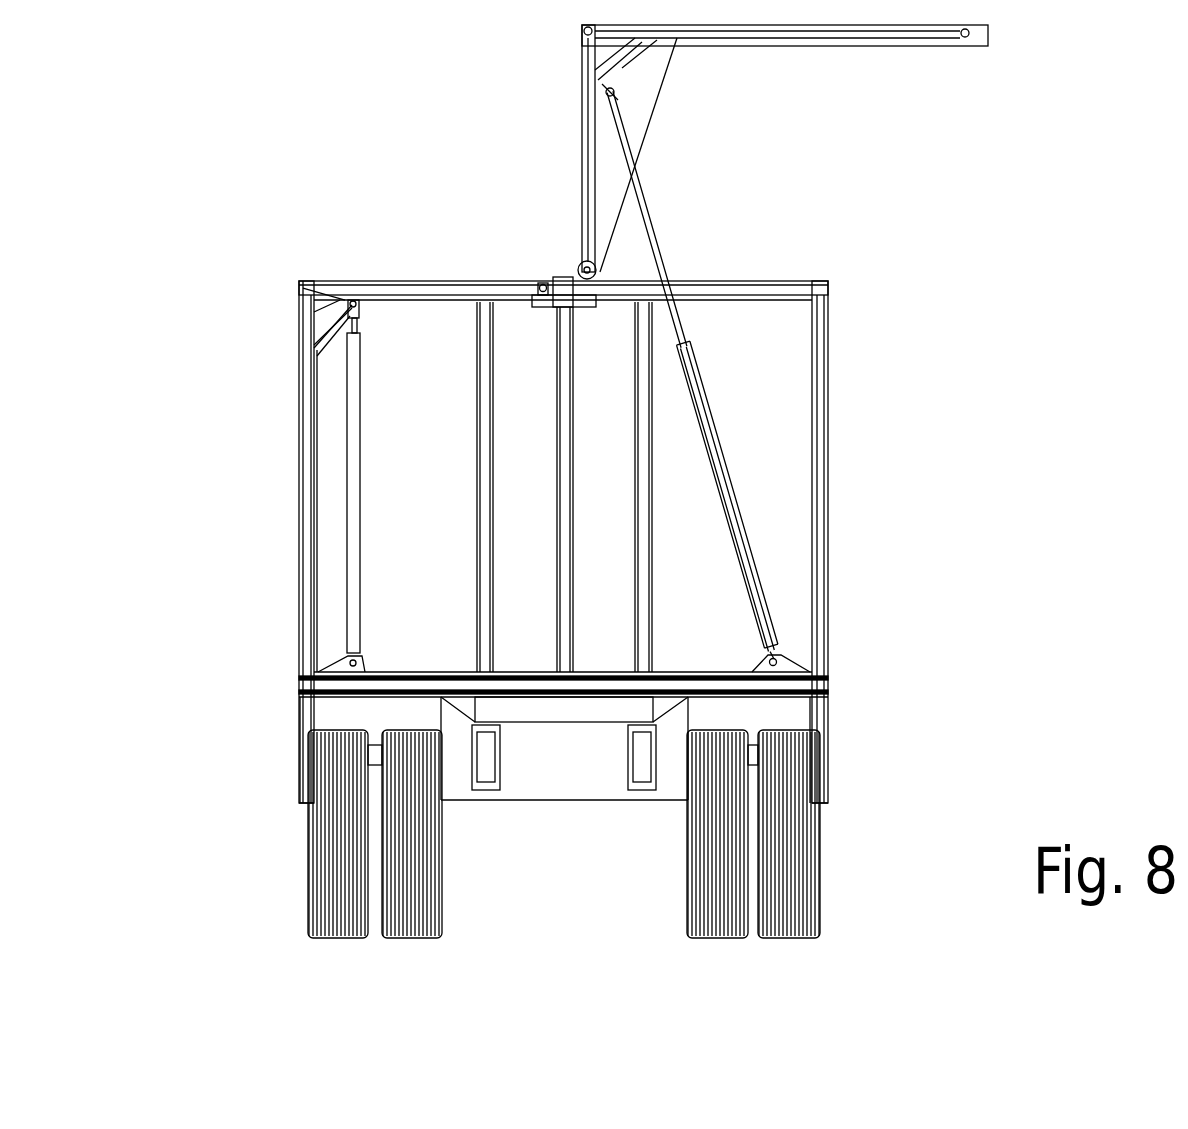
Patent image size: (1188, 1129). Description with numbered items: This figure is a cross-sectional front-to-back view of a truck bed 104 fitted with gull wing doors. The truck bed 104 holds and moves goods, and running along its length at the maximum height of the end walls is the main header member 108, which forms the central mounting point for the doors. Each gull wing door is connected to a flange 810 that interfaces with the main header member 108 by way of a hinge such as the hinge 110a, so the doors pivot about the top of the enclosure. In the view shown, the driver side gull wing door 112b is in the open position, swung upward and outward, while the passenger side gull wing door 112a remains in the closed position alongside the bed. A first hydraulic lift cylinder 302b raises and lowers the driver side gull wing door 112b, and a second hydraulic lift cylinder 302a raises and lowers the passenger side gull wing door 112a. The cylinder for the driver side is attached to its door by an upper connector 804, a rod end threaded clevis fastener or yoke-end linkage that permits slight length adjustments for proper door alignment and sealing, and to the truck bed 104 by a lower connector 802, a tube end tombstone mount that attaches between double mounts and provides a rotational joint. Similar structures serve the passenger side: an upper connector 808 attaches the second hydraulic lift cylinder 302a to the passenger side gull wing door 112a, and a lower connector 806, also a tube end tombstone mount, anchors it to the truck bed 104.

The truck bed 104 is at (790, 712).
The main header member 108 is at (548, 283).
The hinge 110a is at (578, 266).
The passenger side gull wing door 112a is at (298, 565).
The driver side gull wing door 112b is at (722, 43).
The second hydraulic lift cylinder 302a is at (350, 425).
The first hydraulic lift cylinder 302b is at (722, 440).
The lower connector 802 is at (775, 655).
The upper connector 804 is at (612, 93).
The lower connector 806 is at (345, 668).
The upper connector 808 is at (352, 308).
The flange 810 is at (615, 245).